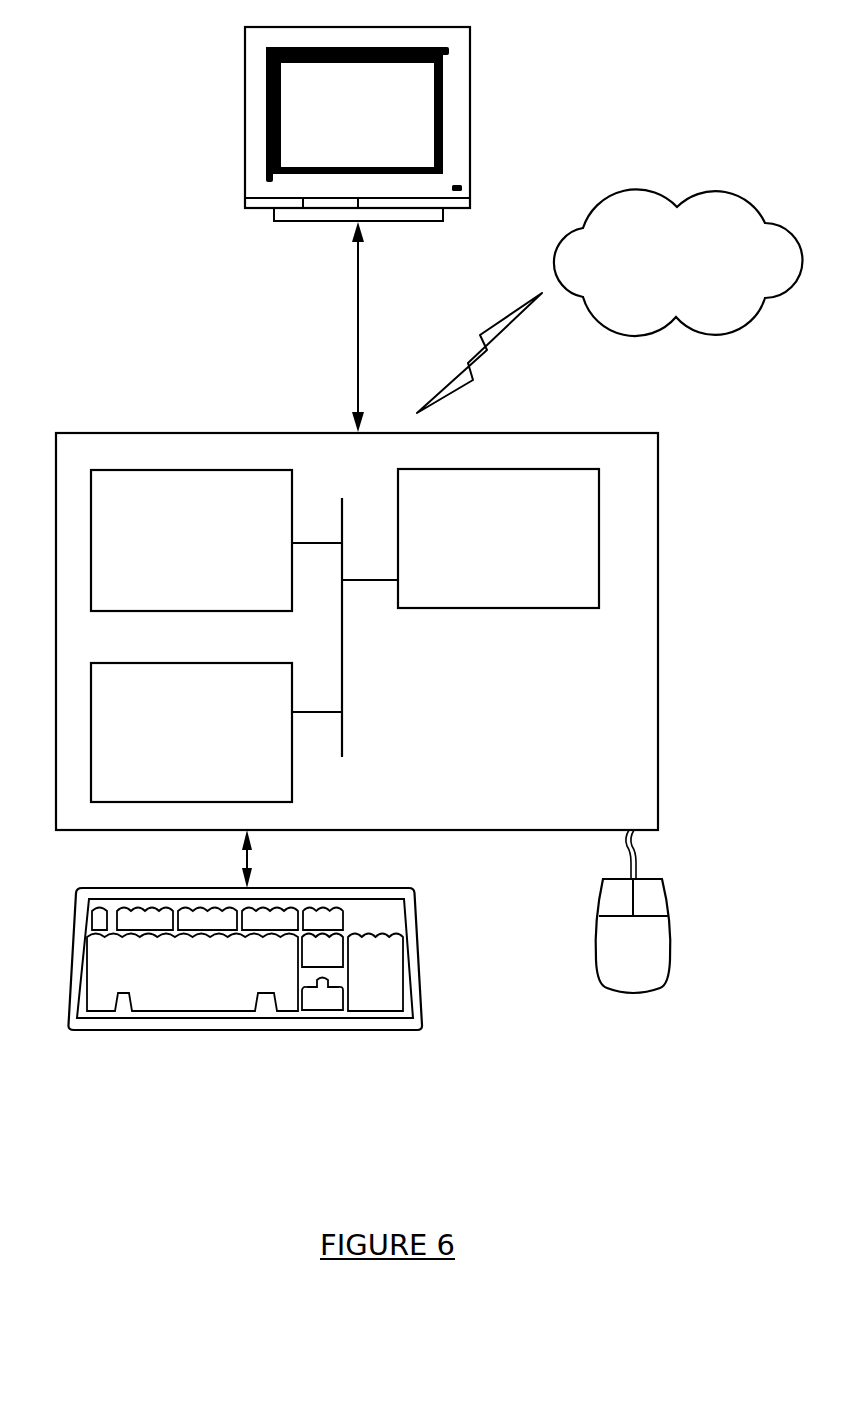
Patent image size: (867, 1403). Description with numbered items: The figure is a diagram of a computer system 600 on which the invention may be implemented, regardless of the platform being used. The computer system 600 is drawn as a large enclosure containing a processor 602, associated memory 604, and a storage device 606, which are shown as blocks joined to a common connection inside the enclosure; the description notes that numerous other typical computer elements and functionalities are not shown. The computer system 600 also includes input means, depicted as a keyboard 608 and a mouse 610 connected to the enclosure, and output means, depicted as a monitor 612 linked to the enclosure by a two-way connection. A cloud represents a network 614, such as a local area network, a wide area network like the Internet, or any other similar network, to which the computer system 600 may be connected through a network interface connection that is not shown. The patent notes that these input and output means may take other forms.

The computer system 600 is at (682, 672).
The processor 602 is at (495, 548).
The memory 604 is at (174, 552).
The storage device 606 is at (172, 742).
The keyboard 608 is at (169, 996).
The mouse 610 is at (614, 952).
The monitor 612 is at (332, 128).
The network 614 is at (669, 272).